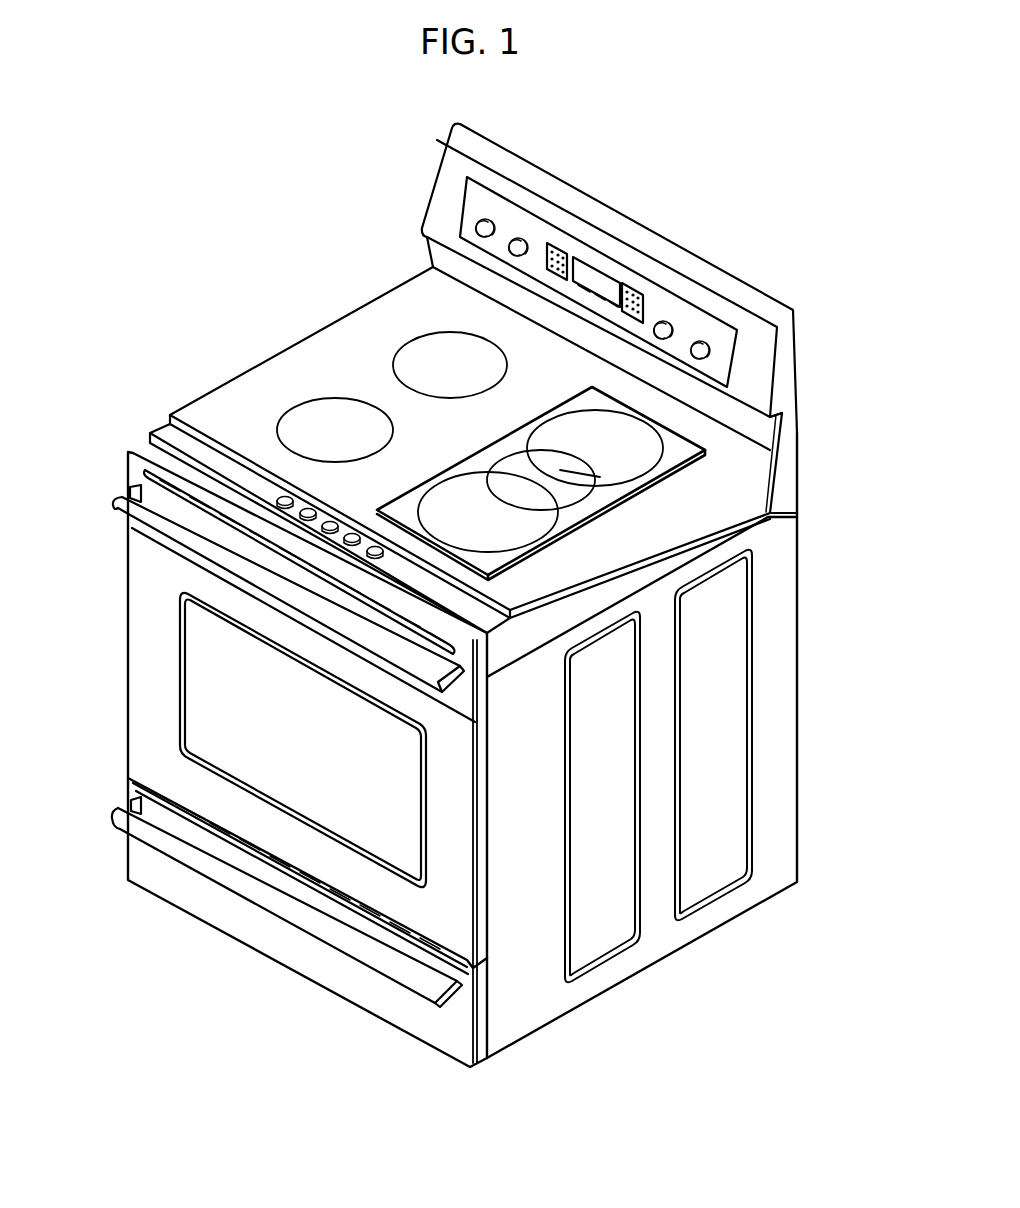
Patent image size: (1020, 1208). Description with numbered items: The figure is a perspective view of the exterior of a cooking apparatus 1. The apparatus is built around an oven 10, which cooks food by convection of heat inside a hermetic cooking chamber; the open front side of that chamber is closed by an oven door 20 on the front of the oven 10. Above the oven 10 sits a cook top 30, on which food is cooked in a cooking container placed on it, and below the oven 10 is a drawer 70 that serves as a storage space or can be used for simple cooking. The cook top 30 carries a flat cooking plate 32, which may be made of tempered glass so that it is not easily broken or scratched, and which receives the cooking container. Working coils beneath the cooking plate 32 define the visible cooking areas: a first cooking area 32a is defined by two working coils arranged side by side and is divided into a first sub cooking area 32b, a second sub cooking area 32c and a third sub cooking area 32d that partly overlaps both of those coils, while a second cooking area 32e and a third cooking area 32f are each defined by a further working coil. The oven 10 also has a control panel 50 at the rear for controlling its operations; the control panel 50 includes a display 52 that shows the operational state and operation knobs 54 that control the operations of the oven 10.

The cooking apparatus 1 is at (150, 211).
The oven 10 is at (494, 890).
The oven door 20 is at (133, 753).
The cook top 30 is at (256, 364).
The cooking plate 32 is at (226, 400).
The first cooking area 32a is at (632, 458).
The first sub cooking area 32b is at (570, 497).
The second sub cooking area 32c is at (523, 537).
The third sub cooking area 32d is at (600, 477).
The second cooking area 32e is at (420, 350).
The third cooking area 32f is at (330, 407).
The control panel 50 is at (556, 226).
The display 52 is at (597, 280).
The operation knobs 54 is at (698, 337).
The drawer 70 is at (223, 902).